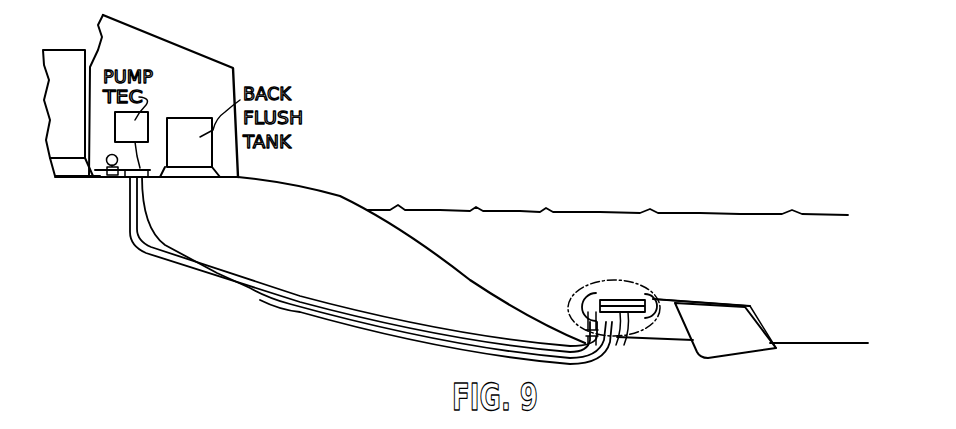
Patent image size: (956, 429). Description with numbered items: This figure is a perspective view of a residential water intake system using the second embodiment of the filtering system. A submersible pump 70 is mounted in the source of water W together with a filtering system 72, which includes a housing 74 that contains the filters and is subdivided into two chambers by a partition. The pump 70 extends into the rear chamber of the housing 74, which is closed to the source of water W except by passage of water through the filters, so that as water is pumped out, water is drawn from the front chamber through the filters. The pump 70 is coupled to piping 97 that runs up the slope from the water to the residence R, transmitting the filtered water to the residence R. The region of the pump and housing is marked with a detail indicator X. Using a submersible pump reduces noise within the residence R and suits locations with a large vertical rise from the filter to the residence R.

The residence R is at (165, 41).
The source of water W is at (442, 212).
The detail region of nozzle assembly X is at (614, 280).
The piping 97 is at (211, 279).
The submersible pump 70 is at (622, 322).
The housing 74 is at (752, 309).
The filtering system 72 is at (805, 310).